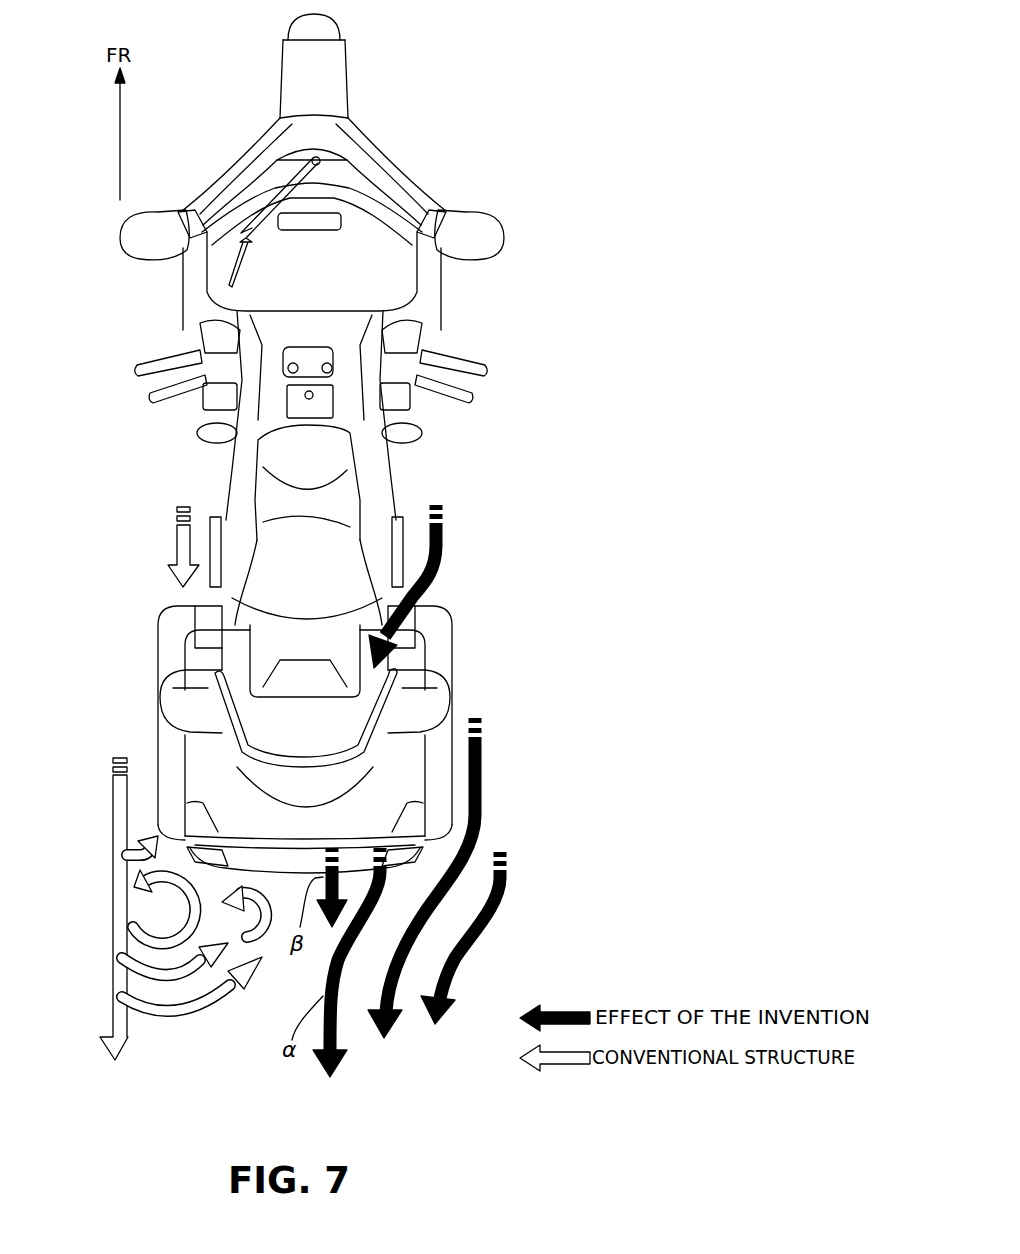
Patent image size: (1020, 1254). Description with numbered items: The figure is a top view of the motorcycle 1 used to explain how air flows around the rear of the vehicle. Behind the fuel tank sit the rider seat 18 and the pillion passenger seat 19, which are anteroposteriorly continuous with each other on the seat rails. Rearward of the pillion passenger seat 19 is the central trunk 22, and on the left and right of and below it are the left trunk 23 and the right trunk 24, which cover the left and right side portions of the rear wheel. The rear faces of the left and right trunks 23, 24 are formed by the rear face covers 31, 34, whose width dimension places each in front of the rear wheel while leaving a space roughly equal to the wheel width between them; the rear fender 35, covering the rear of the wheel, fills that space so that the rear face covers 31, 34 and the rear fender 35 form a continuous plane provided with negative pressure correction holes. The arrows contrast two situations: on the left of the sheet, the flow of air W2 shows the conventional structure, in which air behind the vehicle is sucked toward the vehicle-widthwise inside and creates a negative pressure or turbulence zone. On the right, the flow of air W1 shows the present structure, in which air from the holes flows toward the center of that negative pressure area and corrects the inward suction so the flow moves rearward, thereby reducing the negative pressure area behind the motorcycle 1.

The motorcycle 1 is at (566, 424).
The rider seat 18 is at (323, 537).
The pillion passenger seat 19 is at (255, 653).
The central trunk 22 is at (373, 790).
The left trunk 23 is at (157, 716).
The right trunk 24 is at (457, 705).
The rear face cover 31 is at (305, 974).
The rear face cover 34 is at (305, 974).
The rear fender 35 is at (280, 873).
The flow of air W1 is at (480, 808).
The flow of air W2 is at (113, 882).